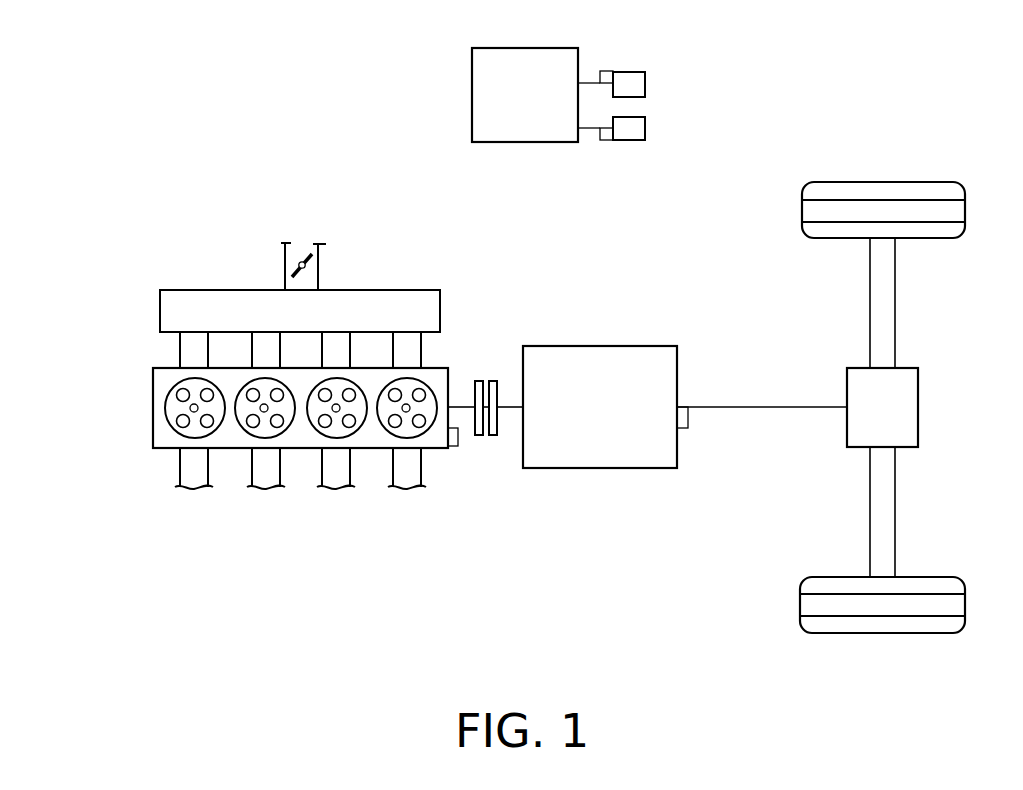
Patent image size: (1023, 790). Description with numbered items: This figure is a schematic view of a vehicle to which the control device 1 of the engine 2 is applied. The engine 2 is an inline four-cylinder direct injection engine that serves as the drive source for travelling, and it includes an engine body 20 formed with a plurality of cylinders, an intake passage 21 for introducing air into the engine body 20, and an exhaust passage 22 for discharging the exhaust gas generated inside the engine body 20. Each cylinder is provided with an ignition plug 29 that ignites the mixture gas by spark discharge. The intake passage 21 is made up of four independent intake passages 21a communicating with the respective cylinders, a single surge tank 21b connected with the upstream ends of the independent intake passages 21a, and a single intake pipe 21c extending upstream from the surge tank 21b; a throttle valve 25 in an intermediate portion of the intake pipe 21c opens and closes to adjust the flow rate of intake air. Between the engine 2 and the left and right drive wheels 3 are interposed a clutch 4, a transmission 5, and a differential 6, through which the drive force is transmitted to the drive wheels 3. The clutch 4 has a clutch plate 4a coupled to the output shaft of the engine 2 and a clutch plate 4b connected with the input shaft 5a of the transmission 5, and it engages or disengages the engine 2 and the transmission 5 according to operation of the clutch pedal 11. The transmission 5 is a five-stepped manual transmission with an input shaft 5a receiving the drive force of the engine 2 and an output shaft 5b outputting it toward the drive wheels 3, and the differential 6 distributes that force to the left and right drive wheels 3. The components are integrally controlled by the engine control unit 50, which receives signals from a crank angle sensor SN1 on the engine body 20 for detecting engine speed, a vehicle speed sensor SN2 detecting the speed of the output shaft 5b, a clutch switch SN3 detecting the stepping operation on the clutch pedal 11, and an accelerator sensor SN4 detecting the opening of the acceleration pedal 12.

The control device 1 is at (140, 123).
The engine 2 is at (133, 398).
The drive wheels 3 is at (933, 192).
The clutch 4 is at (495, 483).
The clutch plate 4a is at (479, 437).
The clutch plate 4b is at (493, 437).
The transmission 5 is at (627, 348).
The input shaft 5a is at (511, 400).
The output shaft 5b is at (695, 406).
The differential 6 is at (918, 385).
The clutch pedal 11 is at (645, 127).
The acceleration pedal 12 is at (645, 81).
The engine body 20 is at (270, 460).
The intake passage 21 is at (422, 254).
The independent intake passages 21a is at (262, 345).
The surge tank 21b is at (192, 298).
The intake pipe 21c is at (316, 266).
The exhaust passage 22 is at (297, 491).
The throttle valve 25 is at (300, 265).
The ignition plug 29 is at (260, 408).
The engine control unit (ECU) 50 is at (530, 47).
The crank angle sensor SN1 is at (452, 448).
The vehicle speed sensor SN2 is at (687, 428).
The clutch switch SN3 is at (606, 141).
The accelerator sensor SN4 is at (606, 71).